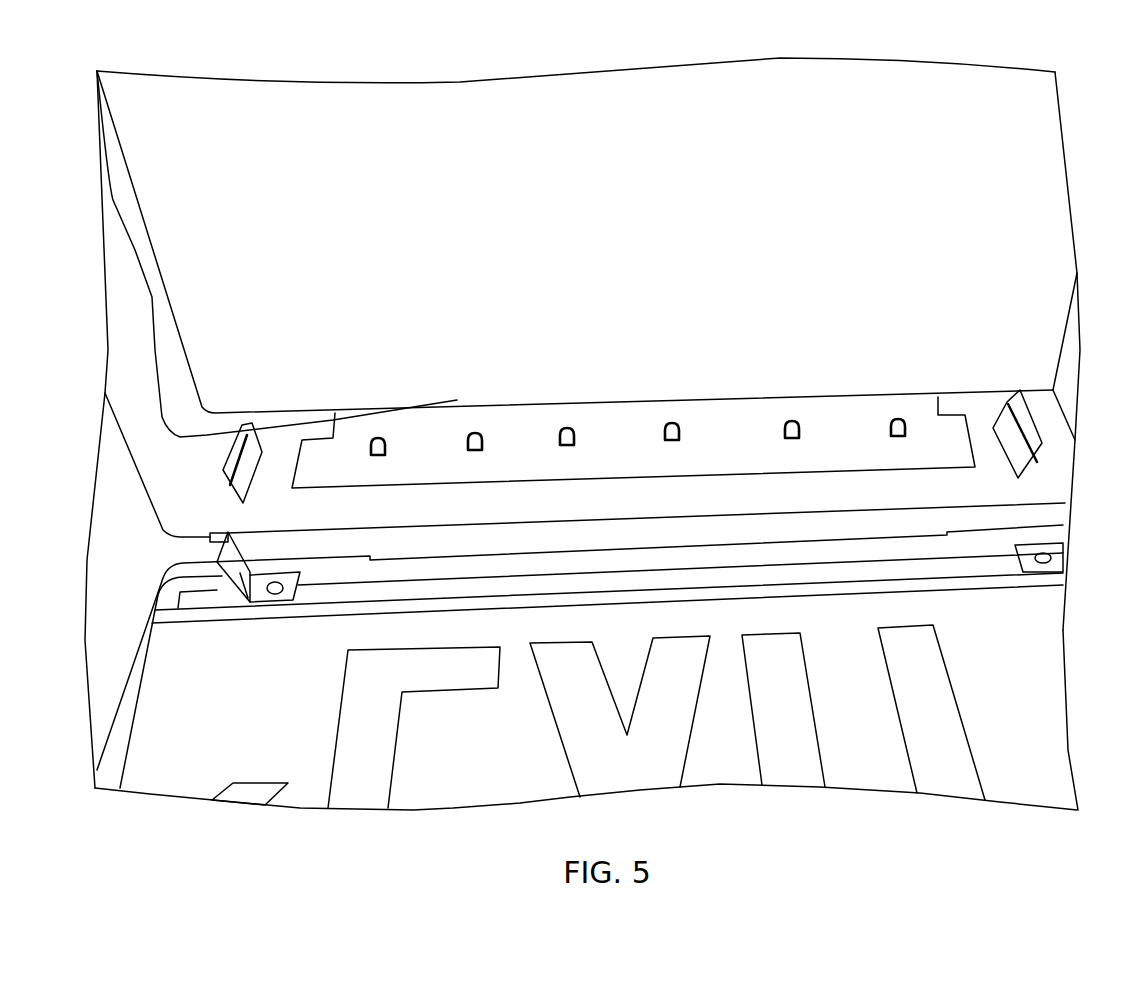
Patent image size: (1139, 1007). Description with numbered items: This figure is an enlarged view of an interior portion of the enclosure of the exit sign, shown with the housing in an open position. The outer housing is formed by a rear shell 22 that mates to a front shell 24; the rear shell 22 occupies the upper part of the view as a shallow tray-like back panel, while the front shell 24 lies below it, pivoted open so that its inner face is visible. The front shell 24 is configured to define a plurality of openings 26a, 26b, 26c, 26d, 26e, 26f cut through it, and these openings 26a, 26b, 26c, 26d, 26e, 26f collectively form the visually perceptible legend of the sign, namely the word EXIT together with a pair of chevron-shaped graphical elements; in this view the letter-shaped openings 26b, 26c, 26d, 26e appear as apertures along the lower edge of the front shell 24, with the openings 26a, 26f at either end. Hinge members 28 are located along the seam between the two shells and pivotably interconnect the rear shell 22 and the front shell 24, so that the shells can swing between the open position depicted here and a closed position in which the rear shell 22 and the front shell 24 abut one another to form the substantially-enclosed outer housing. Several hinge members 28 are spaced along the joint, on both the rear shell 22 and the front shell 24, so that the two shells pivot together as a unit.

The rear shell 22 is at (1060, 223).
The front shell 24 is at (1063, 798).
The opening 26a is at (258, 796).
The opening 26b is at (437, 676).
The opening 26c is at (567, 706).
The opening 26d is at (798, 682).
The opening 26e is at (932, 668).
The opening 26f is at (1068, 756).
The hinge member 28 is at (242, 422).